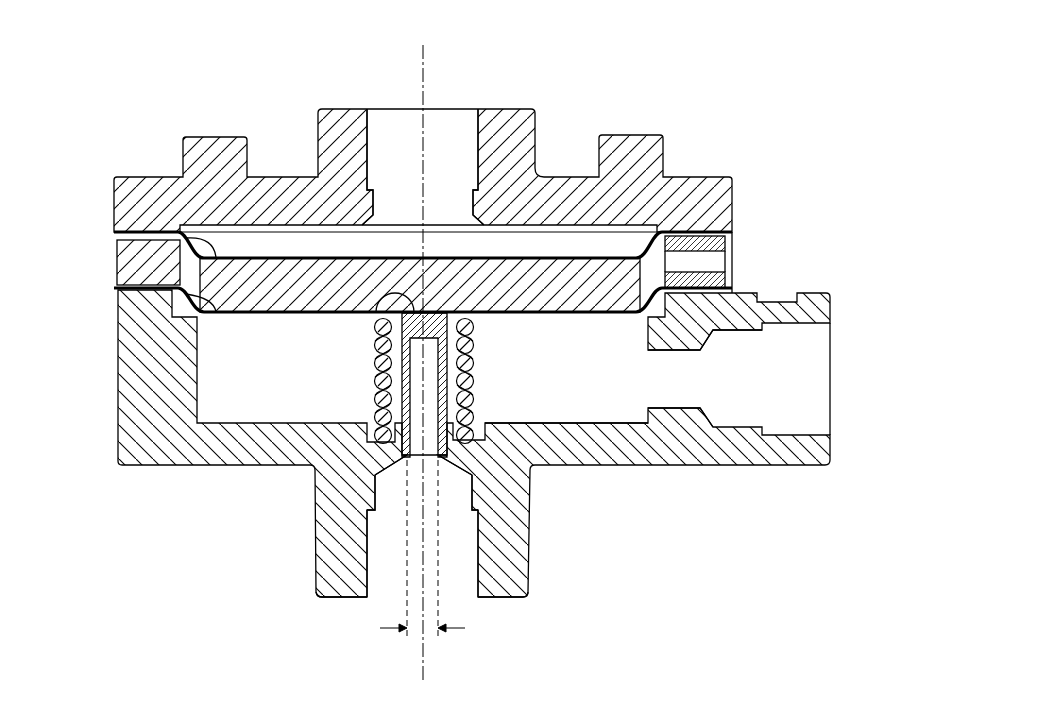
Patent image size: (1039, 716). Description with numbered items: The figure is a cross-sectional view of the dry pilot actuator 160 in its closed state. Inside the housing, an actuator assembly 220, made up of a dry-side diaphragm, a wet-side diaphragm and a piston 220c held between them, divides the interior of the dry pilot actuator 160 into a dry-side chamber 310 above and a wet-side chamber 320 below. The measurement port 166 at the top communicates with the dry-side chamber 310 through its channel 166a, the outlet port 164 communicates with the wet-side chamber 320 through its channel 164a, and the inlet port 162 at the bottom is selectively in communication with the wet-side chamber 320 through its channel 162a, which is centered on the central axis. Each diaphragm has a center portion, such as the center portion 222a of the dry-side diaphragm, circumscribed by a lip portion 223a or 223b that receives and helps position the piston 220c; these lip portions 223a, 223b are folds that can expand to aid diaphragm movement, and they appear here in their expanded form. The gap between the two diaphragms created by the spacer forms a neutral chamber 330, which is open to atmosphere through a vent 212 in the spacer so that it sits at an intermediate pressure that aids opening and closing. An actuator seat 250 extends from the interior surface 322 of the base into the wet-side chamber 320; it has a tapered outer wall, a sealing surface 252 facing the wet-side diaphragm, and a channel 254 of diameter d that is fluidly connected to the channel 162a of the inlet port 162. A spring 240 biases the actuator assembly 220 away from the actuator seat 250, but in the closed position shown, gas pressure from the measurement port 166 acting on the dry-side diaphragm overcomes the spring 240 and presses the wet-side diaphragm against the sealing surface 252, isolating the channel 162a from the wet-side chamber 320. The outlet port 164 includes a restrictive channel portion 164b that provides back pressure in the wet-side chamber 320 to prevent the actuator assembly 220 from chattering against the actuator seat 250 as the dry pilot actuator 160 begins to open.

The dry pilot actuator 160 is at (808, 134).
The measurement port 166 is at (503, 108).
The channel of the measurement port 166a is at (471, 122).
The actuator assembly 220 is at (553, 257).
The piston 220c is at (258, 291).
The center portion of the dry-side diaphragm 222a is at (271, 229).
The lip portion of the dry-side diaphragm 223a is at (190, 236).
The lip portion of the wet-side diaphragm 223b is at (192, 299).
The dry-side chamber 310 is at (726, 238).
The vent 212 is at (735, 259).
The neutral chamber 330 is at (731, 273).
The wet-side chamber 320 is at (628, 355).
The outlet port 164 is at (833, 445).
The channel of the outlet port 164a is at (823, 378).
The restrictive channel portion 164b is at (667, 412).
The interior surface of the base 322 is at (586, 411).
The sealing surface 252 is at (396, 306).
The spring 240 is at (473, 352).
The actuator seat 250 is at (375, 410).
The channel of the actuator seat 254 is at (413, 443).
The inlet port 162 is at (505, 600).
The channel of the inlet port 162a is at (398, 590).